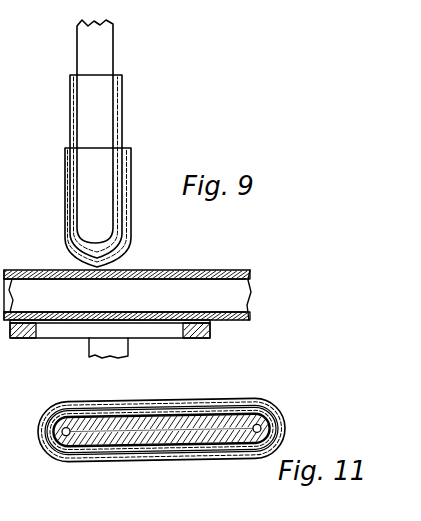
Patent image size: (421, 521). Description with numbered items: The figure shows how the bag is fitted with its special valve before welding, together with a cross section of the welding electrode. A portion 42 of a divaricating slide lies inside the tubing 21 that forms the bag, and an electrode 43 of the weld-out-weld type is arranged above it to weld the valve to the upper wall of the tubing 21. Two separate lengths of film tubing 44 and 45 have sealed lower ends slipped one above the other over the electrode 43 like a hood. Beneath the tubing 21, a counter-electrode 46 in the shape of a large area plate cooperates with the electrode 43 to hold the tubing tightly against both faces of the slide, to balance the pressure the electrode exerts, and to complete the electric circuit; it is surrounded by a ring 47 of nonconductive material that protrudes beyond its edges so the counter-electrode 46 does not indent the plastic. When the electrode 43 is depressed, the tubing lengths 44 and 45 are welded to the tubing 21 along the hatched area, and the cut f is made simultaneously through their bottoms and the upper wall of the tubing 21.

In FIG. 9, the tubing 21 is at (159, 274).
In FIG. 9, the portion of a divaricating slide 42 is at (162, 288).
In FIG. 9, the electrode 43 is at (98, 52).
In FIG. 11, the electrode 43 is at (157, 463).
In FIG. 9, the inner tubing length 44 is at (131, 75).
In FIG. 11, the inner tubing length 44 is at (284, 420).
In FIG. 9, the outer tubing length 45 is at (138, 146).
In FIG. 11, the outer tubing length 45 is at (286, 400).
In FIG. 9, the counter-electrode 46 is at (128, 350).
In FIG. 9, the ring of nonconductive material 47 is at (12, 340).
In FIG. 11, the cut f is at (70, 458).